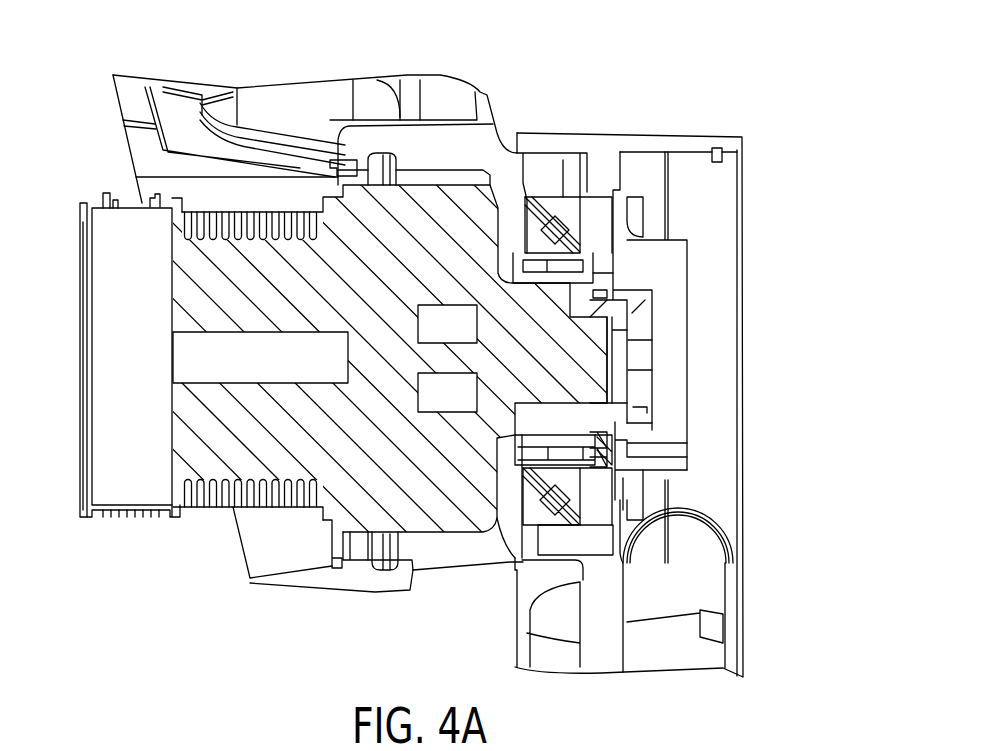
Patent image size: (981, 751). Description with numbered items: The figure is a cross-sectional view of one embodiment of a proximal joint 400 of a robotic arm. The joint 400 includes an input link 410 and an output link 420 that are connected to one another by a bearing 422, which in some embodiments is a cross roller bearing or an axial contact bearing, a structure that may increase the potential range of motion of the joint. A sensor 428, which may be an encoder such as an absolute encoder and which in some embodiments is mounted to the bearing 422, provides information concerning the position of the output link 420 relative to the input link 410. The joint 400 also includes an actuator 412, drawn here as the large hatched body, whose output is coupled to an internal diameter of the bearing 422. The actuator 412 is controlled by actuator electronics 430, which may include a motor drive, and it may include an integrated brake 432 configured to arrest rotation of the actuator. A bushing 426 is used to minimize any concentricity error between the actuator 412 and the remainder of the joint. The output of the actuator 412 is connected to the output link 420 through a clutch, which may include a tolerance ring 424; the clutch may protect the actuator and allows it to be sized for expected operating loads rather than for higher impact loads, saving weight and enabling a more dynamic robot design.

The proximal joint 400 is at (706, 82).
The input link 410 is at (112, 105).
The actuator 412 is at (263, 437).
The output link 420 is at (743, 598).
The bearing 422 is at (530, 195).
The tolerance ring 424 is at (690, 452).
The bushing 426 is at (593, 273).
The sensor 428 is at (520, 466).
The actuator electronics 430 is at (123, 518).
The integrated brake 432 is at (463, 406).